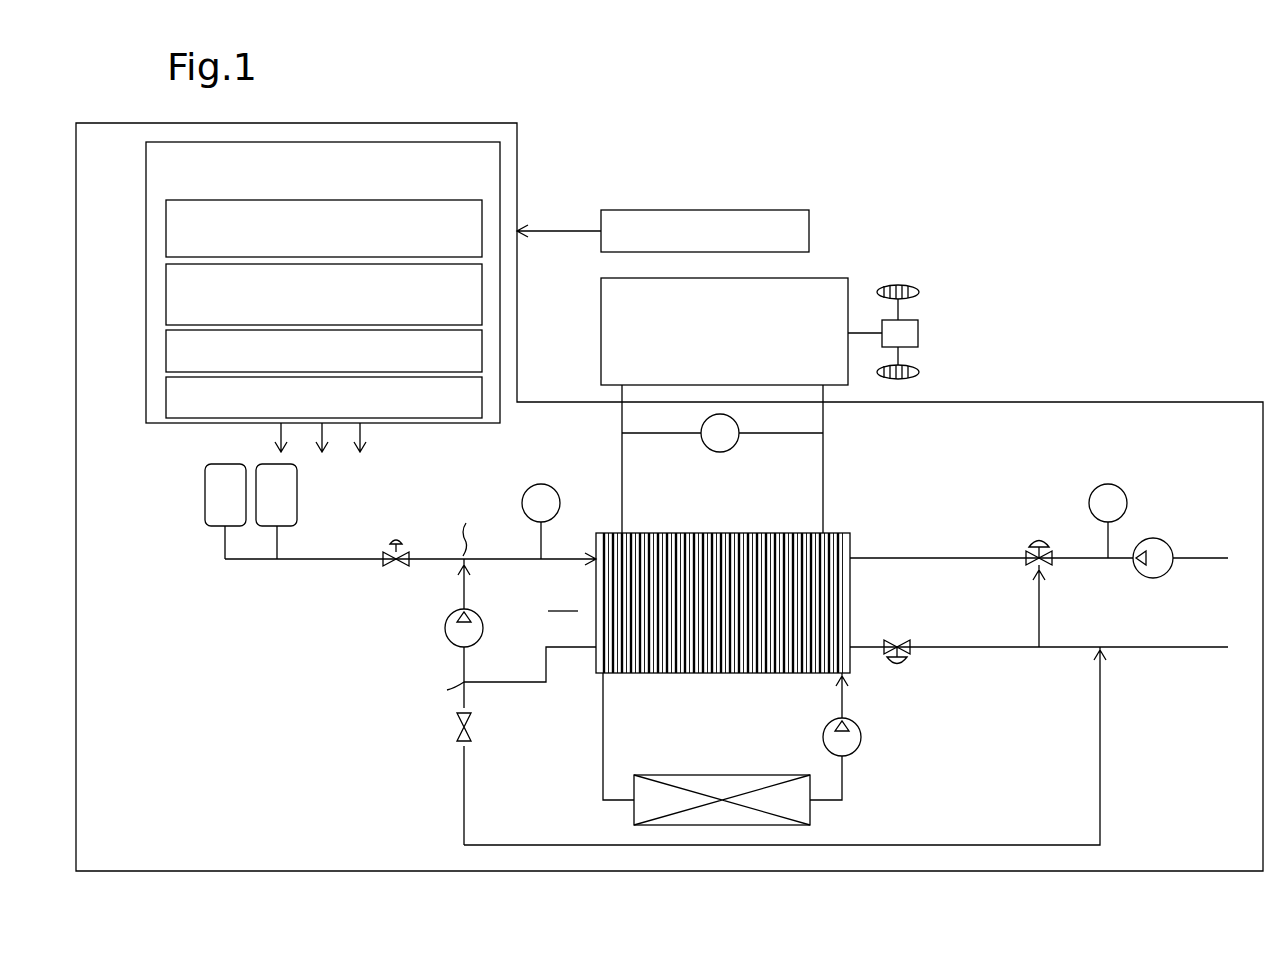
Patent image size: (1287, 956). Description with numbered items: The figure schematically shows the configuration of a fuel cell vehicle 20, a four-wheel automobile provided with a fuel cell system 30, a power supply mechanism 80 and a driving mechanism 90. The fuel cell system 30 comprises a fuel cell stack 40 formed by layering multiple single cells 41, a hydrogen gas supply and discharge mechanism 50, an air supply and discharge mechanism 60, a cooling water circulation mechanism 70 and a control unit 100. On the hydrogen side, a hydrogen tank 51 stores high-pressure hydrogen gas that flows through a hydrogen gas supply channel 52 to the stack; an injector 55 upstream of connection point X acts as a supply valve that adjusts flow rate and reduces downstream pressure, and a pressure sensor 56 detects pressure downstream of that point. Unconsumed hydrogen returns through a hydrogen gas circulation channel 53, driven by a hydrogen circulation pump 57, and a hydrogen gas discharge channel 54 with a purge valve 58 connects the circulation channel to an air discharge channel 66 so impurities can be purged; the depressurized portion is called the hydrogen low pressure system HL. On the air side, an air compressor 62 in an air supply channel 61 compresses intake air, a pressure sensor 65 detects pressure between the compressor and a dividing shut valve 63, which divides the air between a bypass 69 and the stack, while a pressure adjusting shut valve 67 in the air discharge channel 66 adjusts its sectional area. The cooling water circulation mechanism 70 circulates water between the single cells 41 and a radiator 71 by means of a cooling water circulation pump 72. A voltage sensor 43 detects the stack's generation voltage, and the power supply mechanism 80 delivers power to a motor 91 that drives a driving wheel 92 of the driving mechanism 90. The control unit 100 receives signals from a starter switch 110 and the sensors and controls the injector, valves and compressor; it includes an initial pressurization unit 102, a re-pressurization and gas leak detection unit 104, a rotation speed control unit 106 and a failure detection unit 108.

The fuel cell vehicle 20 is at (1116, 296).
The fuel cell system 30 is at (1212, 400).
The fuel cell stack 40 is at (723, 571).
The single cell 41 is at (708, 533).
The voltage sensor 43 is at (706, 446).
The hydrogen gas supply and discharge mechanism 50 is at (629, 651).
The hydrogen tank 51 is at (205, 490).
The hydrogen gas supply channel 52 is at (430, 555).
The hydrogen gas circulation channel 53 is at (464, 656).
The hydrogen gas discharge channel 54 is at (464, 786).
The injector 55 is at (392, 569).
The pressure sensor 56 is at (547, 485).
The hydrogen circulation pump 57 is at (480, 622).
The purge valve 58 is at (458, 725).
The air supply and discharge mechanism 60 is at (1039, 588).
The air supply channel 61 is at (1196, 556).
The air compressor 62 is at (1168, 573).
The dividing shut valve 63 is at (1036, 568).
The pressure sensor 65 is at (1112, 484).
The air discharge channel 66 is at (1130, 650).
The pressure adjusting shut valve 67 is at (890, 640).
The bypass 69 is at (1041, 623).
The cooling water circulation mechanism 70 is at (771, 755).
The radiator 71 is at (812, 814).
The cooling water circulation pump 72 is at (822, 736).
The power supply mechanism 80 is at (810, 279).
The driving mechanism 90 is at (940, 303).
The motor 91 is at (918, 333).
The driving wheel 92 is at (920, 292).
The control unit 100 is at (517, 142).
The initial pressurization unit 102 is at (166, 229).
The re-pressurization and gas leak detection unit 104 is at (166, 288).
The rotation speed control unit 106 is at (166, 350).
The failure detection unit 108 is at (166, 397).
The starter switch 110 is at (760, 207).